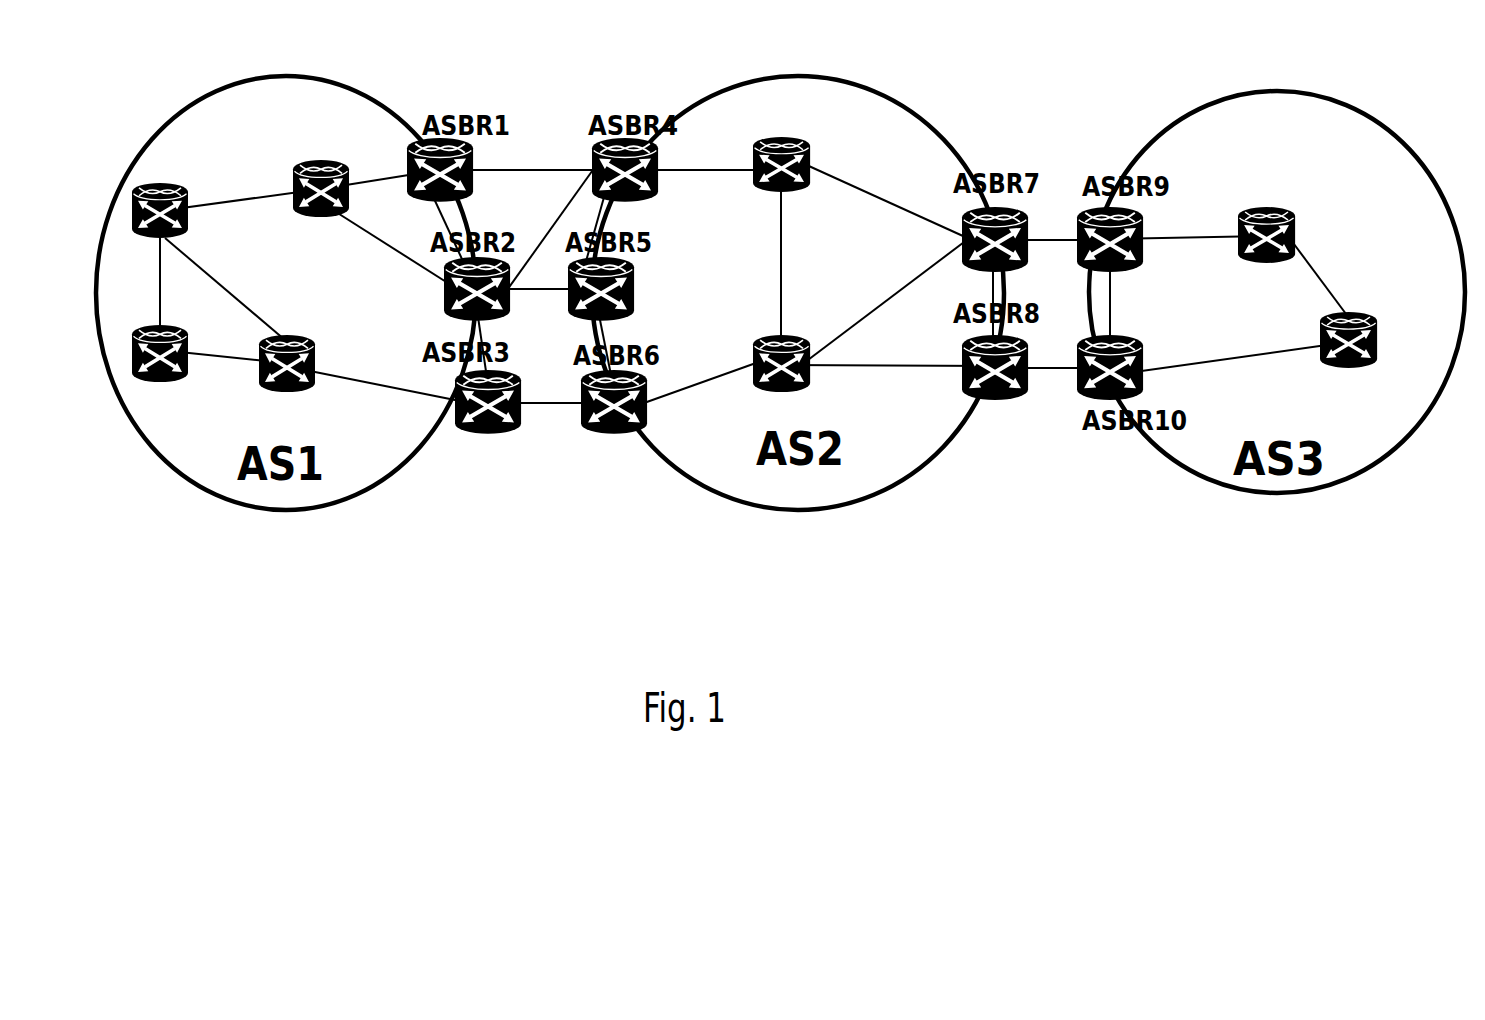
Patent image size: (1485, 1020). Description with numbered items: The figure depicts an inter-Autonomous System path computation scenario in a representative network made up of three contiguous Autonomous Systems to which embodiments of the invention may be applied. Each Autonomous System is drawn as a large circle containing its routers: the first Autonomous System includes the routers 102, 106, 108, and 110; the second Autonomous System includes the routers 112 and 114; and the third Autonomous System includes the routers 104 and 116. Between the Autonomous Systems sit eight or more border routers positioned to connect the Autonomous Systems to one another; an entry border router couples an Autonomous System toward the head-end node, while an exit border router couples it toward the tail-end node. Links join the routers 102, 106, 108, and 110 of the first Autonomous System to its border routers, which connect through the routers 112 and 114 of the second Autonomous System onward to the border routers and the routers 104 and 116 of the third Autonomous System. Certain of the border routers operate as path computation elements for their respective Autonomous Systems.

The router 102 is at (178, 185).
The router 104 is at (1287, 207).
The router 106 is at (180, 323).
The router 108 is at (338, 160).
The router 110 is at (310, 335).
The router 112 is at (802, 137).
The router 114 is at (802, 335).
The router 116 is at (1367, 312).